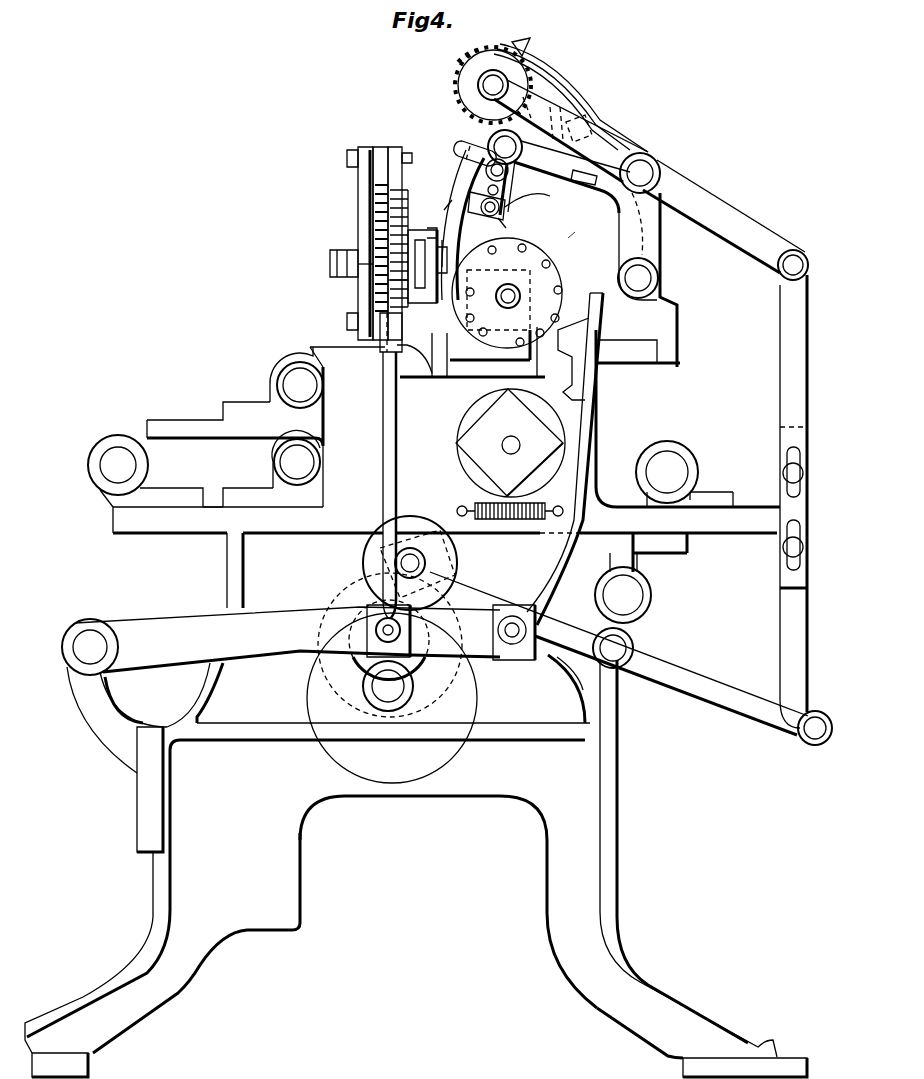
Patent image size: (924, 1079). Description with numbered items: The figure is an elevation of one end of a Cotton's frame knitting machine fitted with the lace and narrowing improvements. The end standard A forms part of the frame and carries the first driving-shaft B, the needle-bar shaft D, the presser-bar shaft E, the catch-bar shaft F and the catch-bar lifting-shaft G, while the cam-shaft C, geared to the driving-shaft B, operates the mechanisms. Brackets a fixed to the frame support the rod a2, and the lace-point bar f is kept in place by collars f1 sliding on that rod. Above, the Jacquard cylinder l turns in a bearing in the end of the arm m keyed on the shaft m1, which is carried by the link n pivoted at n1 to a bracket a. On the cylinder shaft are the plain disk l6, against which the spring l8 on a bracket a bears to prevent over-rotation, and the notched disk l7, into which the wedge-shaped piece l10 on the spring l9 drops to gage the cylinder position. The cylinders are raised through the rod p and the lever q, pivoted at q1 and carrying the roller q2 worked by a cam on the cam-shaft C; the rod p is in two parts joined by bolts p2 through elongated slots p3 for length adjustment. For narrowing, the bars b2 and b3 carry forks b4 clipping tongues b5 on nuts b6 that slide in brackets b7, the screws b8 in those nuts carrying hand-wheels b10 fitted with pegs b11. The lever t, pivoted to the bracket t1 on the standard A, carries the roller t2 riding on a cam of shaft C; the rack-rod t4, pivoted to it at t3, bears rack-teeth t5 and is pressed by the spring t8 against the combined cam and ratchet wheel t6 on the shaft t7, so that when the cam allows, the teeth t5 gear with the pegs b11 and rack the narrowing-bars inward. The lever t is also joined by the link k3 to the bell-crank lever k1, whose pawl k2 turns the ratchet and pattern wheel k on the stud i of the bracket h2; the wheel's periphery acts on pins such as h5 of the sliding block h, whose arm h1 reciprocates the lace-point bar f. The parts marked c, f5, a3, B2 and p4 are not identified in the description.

The plain disk l6 is at (493, 85).
The notched disk l7 is at (478, 58).
The Jacquard cylinder l is at (493, 85).
The wedge-shaped piece l10 is at (524, 42).
The spring l9 is at (556, 84).
The spring l8 is at (562, 93).
The arm m is at (571, 131).
The shaft m1 is at (640, 173).
The connecting rod c is at (725, 220).
The link n is at (638, 246).
The pivot n1 is at (638, 278).
The bracket a is at (446, 356).
The rod a2 is at (505, 147).
The finger f5 is at (468, 152).
The collar f1 is at (492, 160).
The lace-point bar f is at (505, 180).
The pivot a3 is at (502, 206).
The narrowing-bar b3 is at (513, 224).
The narrowing-bar b2 is at (537, 200).
The peg b11 is at (583, 242).
The tongue b5 is at (468, 225).
The fork b4 is at (450, 203).
The nut b6 is at (507, 293).
The screw b8 is at (496, 296).
The hand-wheel b10 is at (515, 295).
The bracket b7 is at (484, 352).
The pawl k2 is at (382, 147).
The bell-crank lever k1 is at (362, 186).
The combined ratchet and pattern wheel k is at (376, 214).
The sliding block h is at (418, 252).
The arm h1 is at (430, 232).
The pin or stud i is at (330, 263).
The pin h5 is at (366, 270).
The bracket h2 is at (395, 281).
The link k3 is at (382, 444).
The needle-bar shaft D is at (296, 377).
The presser-bar shaft E is at (296, 459).
The first driving-shaft B is at (205, 487).
The bracket B2 is at (199, 498).
The combined cam and ratchet wheel t6 is at (510, 443).
The shaft t7 is at (520, 446).
The spring t8 is at (500, 522).
The rack-rod t4 is at (565, 459).
The rack-teeth t5 is at (567, 359).
The roller q2 is at (396, 563).
The roller t2 is at (372, 610).
The lever t is at (287, 639).
The bracket t1 is at (142, 735).
The pivot t3 is at (512, 644).
The cam-shaft C is at (392, 698).
The lever q is at (619, 653).
The catch-bar lifting-shaft G is at (623, 588).
The pivot q1 is at (613, 648).
The catch-bar shaft F is at (684, 474).
The rod p is at (808, 363).
The elongated slot p3 is at (802, 457).
The bolt p2 is at (803, 473).
The pin p4 is at (803, 547).
The end standard A is at (416, 866).